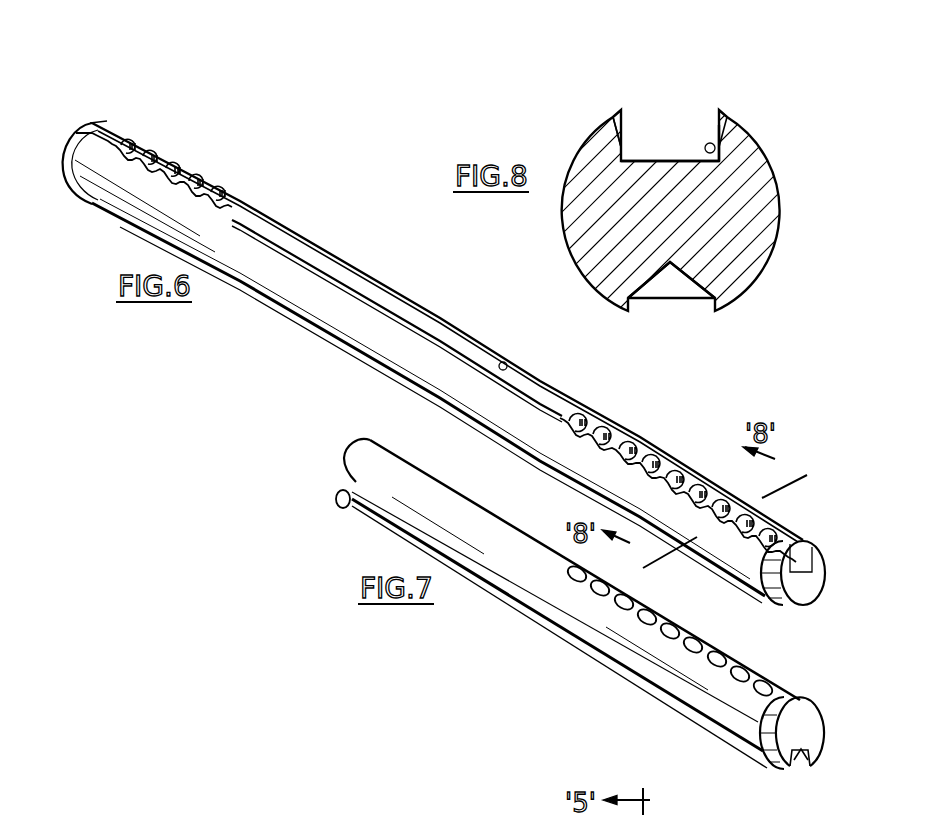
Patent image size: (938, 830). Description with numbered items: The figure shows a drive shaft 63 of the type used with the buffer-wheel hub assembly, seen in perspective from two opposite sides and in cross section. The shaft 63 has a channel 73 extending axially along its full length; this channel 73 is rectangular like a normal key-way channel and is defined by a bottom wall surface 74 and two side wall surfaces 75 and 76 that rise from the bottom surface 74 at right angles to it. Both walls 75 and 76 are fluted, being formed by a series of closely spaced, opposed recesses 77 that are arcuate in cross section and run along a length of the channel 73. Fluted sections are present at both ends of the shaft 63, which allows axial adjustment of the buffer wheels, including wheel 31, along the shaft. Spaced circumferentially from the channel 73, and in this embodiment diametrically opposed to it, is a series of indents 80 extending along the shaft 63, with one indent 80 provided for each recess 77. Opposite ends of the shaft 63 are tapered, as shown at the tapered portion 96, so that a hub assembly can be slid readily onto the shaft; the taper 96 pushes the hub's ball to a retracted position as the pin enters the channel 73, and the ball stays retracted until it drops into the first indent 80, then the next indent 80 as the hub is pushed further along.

In FIG. 6, the drive shaft 63 is at (252, 341).
In FIG. 7, the drive shaft 63 is at (528, 637).
In FIG. 6, the channel 73 is at (452, 327).
In FIG. 7, the channel 73 is at (800, 762).
In FIG. 8, the channel 73 is at (647, 130).
In FIG. 6, the bottom wall surface 74 is at (381, 308).
In FIG. 8, the bottom wall surface 74 is at (654, 161).
In FIG. 8, the side wall surface 75 is at (722, 150).
In FIG. 6, the side wall surface 76 is at (508, 365).
In FIG. 8, the side wall surface 76 is at (617, 107).
In FIG. 6, the recesses 77 is at (657, 451).
In FIG. 8, the recesses 77 is at (613, 115).
In FIG. 7, the indents 80 is at (752, 667).
In FIG. 8, the indents 80 is at (685, 300).
In FIG. 6, the tapered portion 96 is at (70, 134).
In FIG. 7, the tapered portion 96 is at (756, 738).
In FIG. 7, the wheel 31 is at (516, 814).